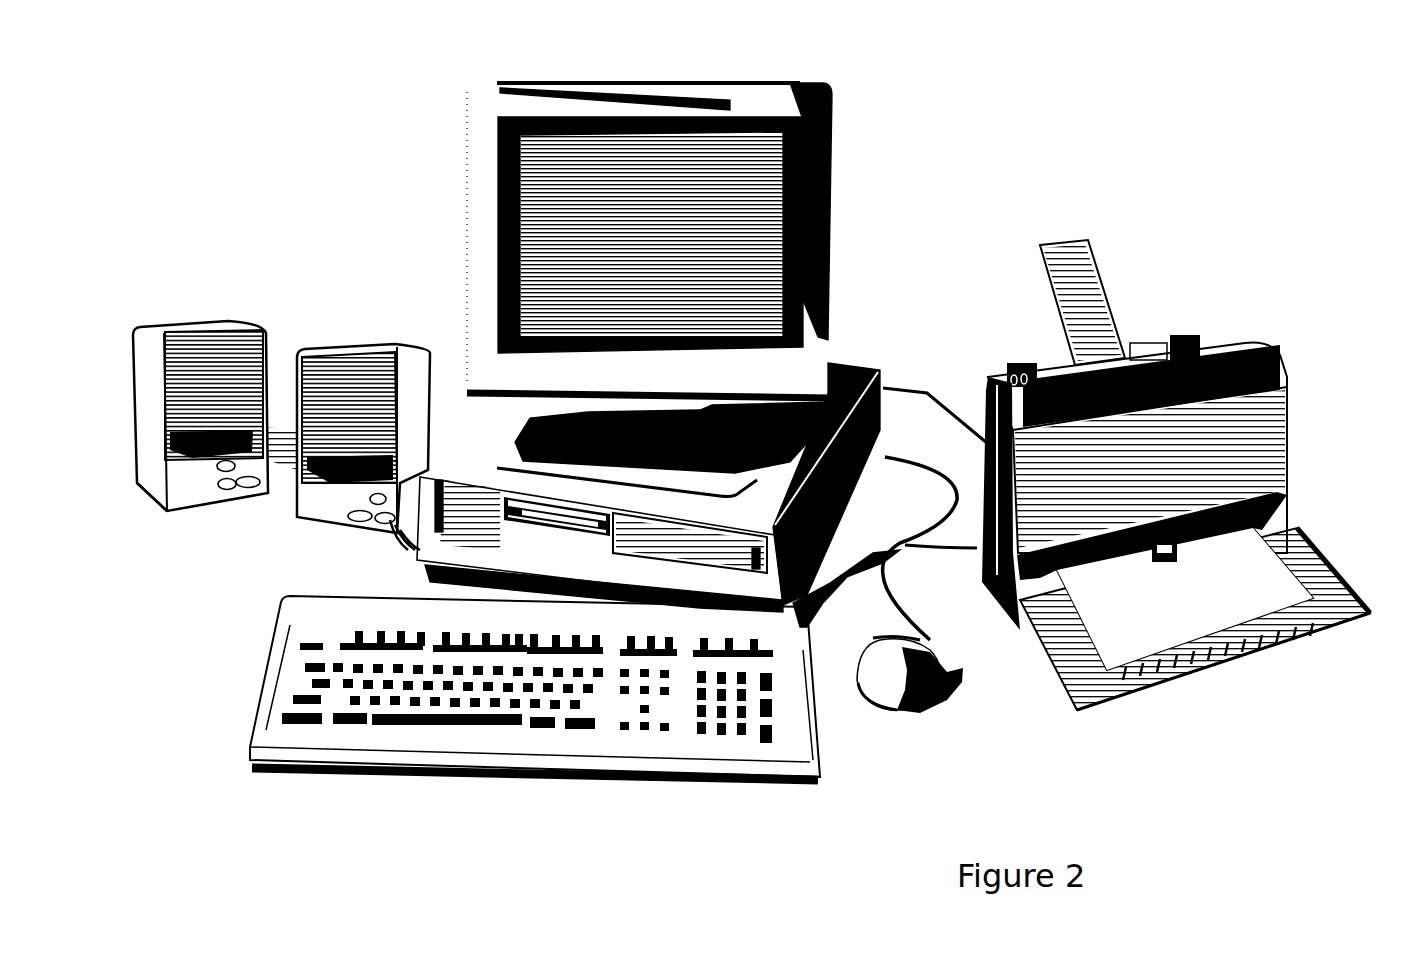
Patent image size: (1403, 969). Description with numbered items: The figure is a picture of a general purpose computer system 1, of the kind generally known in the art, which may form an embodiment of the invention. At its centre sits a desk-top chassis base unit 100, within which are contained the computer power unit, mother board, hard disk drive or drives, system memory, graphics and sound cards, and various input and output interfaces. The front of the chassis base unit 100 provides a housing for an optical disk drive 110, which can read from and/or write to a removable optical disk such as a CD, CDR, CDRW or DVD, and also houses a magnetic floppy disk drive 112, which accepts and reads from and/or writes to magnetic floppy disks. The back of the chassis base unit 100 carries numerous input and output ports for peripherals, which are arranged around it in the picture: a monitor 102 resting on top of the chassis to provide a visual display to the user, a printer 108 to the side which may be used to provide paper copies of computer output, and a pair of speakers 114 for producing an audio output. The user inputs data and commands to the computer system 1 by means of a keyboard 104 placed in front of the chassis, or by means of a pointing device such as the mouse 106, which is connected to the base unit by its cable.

The general purpose computer system 1 is at (1060, 136).
The desk-top chassis base unit 100 is at (860, 366).
The monitor 102 is at (832, 132).
The keyboard 104 is at (715, 740).
The mouse 106 is at (908, 713).
The printer 108 is at (1222, 373).
The optical disk drive 110 is at (673, 540).
The magnetic floppy disk drive 112 is at (510, 527).
The speakers 114 is at (333, 347).